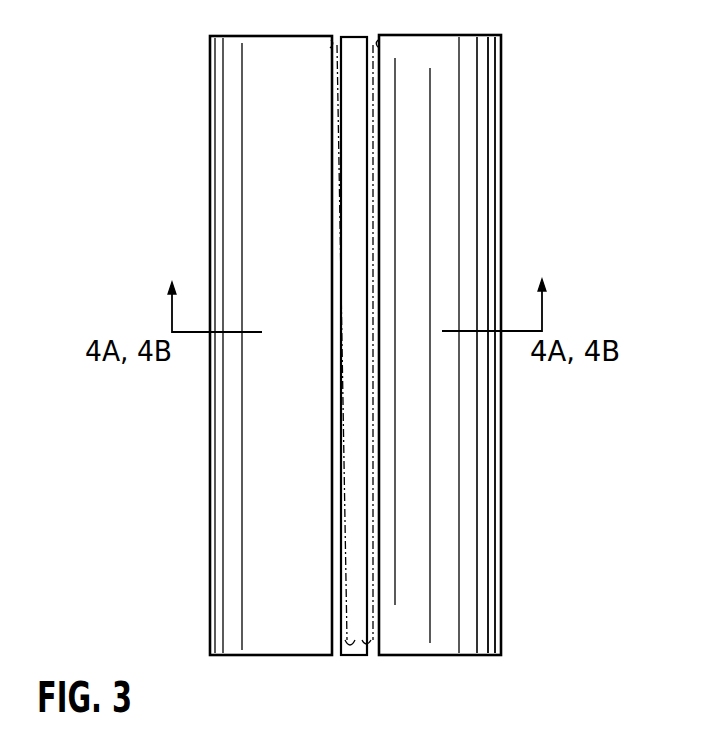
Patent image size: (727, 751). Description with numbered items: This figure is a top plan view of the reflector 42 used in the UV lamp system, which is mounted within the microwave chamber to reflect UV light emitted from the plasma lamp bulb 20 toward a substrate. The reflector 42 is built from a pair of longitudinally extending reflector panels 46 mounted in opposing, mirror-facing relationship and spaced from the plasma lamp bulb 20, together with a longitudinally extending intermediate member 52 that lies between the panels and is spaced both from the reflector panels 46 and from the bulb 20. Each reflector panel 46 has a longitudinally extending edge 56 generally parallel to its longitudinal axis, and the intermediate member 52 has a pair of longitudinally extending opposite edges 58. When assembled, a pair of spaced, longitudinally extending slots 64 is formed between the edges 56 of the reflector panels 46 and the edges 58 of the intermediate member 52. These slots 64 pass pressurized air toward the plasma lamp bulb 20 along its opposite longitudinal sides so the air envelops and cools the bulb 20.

The plasma lamp bulb 20 is at (333, 462).
The reflector 42 is at (528, 481).
The reflector panels 46 is at (210, 487).
The intermediate member 52 is at (353, 42).
The edge 56 is at (331, 48).
The opposite edges 58 is at (333, 622).
The slots 64 is at (375, 337).